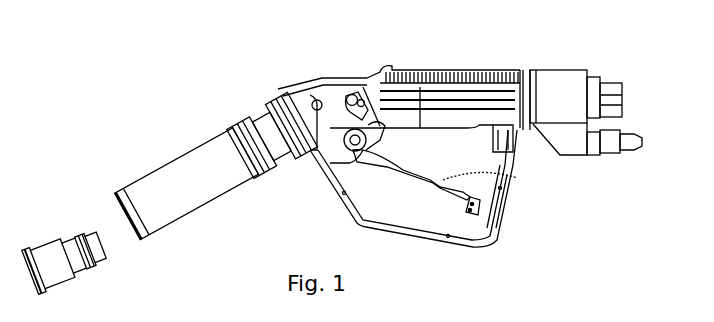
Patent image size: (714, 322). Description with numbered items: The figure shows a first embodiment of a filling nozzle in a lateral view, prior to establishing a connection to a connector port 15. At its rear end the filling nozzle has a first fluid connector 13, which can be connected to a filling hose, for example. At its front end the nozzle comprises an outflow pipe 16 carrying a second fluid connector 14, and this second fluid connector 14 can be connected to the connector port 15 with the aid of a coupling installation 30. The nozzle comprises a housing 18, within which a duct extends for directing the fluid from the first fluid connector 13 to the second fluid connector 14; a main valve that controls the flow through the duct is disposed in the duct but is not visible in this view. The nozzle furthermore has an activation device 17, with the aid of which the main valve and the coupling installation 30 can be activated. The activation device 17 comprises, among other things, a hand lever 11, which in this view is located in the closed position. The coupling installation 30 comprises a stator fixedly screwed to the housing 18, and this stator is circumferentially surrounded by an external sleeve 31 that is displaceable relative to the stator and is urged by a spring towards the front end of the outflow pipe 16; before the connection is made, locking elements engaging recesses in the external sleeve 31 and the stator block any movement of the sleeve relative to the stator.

The hand lever 11 is at (507, 178).
The first fluid connector 13 is at (623, 104).
The second fluid connector 14 is at (131, 236).
The connector port 15 is at (46, 254).
The outflow pipe 16 is at (181, 176).
The activation device 17 is at (305, 158).
The housing 18 is at (333, 84).
The coupling installation 30 is at (181, 193).
The external sleeve 31 is at (152, 188).